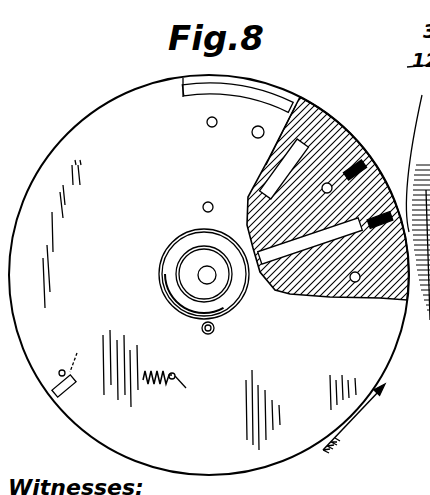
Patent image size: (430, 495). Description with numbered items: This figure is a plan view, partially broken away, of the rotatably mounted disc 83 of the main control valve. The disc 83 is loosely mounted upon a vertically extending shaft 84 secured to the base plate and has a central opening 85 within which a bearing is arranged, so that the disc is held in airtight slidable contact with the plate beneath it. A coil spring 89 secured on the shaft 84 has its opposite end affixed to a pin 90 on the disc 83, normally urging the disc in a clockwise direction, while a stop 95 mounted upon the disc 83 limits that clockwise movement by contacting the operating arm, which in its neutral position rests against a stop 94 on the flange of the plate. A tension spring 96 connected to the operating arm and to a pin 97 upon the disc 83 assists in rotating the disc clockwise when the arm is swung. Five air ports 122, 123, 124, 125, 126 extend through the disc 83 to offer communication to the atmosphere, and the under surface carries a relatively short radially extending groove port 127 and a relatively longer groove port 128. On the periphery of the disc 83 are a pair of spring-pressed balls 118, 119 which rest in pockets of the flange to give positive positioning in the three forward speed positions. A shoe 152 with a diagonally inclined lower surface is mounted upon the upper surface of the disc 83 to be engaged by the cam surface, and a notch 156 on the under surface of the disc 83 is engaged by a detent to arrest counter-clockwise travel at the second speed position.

The rotatably mounted disc 83 is at (209, 275).
The shoe 152 is at (183, 80).
The air port 123 is at (207, 122).
The air port 124 is at (252, 131).
The air port 122 is at (203, 206).
The groove port 127 is at (295, 137).
The air port 125 is at (328, 183).
The groove port 128 is at (303, 248).
The air port 126 is at (355, 283).
The spring-pressed ball 118 is at (370, 157).
The spring-pressed ball 119 is at (392, 205).
The stop 94 is at (429, 305).
The shaft 84 is at (197, 265).
The central opening 85 is at (204, 256).
The coil spring 89 is at (163, 294).
The pin 90 is at (213, 332).
The stop 95 is at (70, 388).
The notch 156 is at (76, 353).
The tension spring 96 is at (148, 376).
The pin 97 is at (195, 391).